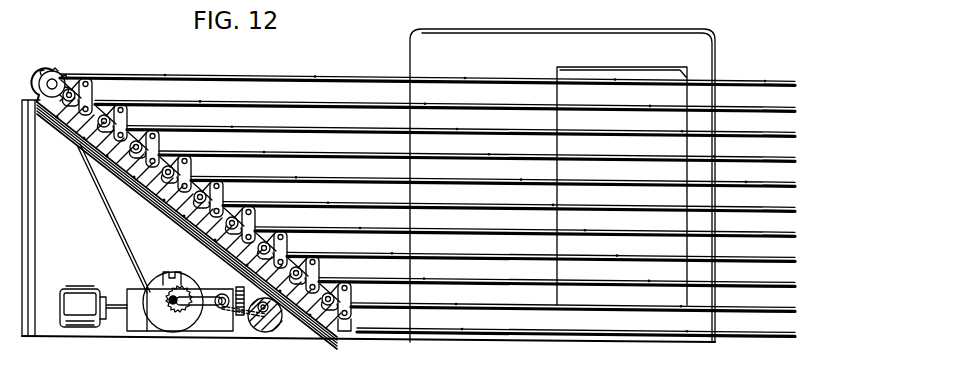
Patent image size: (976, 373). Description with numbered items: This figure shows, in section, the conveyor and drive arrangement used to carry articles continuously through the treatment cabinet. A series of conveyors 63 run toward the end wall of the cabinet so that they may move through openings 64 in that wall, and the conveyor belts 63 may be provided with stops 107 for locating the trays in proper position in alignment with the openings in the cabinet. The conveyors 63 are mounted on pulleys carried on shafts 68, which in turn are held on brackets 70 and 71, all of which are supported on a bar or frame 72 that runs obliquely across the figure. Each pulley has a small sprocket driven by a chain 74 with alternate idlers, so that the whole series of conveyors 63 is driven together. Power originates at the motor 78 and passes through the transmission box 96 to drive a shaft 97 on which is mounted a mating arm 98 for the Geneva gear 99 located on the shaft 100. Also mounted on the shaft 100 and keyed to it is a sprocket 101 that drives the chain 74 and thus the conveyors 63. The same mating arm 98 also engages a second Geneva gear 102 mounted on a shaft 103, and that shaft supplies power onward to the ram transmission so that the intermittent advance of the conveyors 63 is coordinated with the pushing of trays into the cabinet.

The conveyors 63 is at (258, 73).
The openings 64 is at (557, 68).
The shafts 68 is at (57, 70).
The bracket 70 is at (162, 140).
The bracket 71 is at (342, 330).
The bar or frame 72 is at (166, 218).
The chain 74 is at (112, 219).
The motor 78 is at (81, 296).
The transmission box 96 is at (127, 290).
The shaft 97 is at (222, 318).
The mating arm 98 is at (196, 312).
The Geneva gear 99 is at (169, 330).
The shaft 100 is at (180, 291).
The sprocket 101 is at (171, 280).
The second Geneva gear 102 is at (262, 338).
The shaft 103 is at (246, 332).
The stops 107 is at (562, 29).